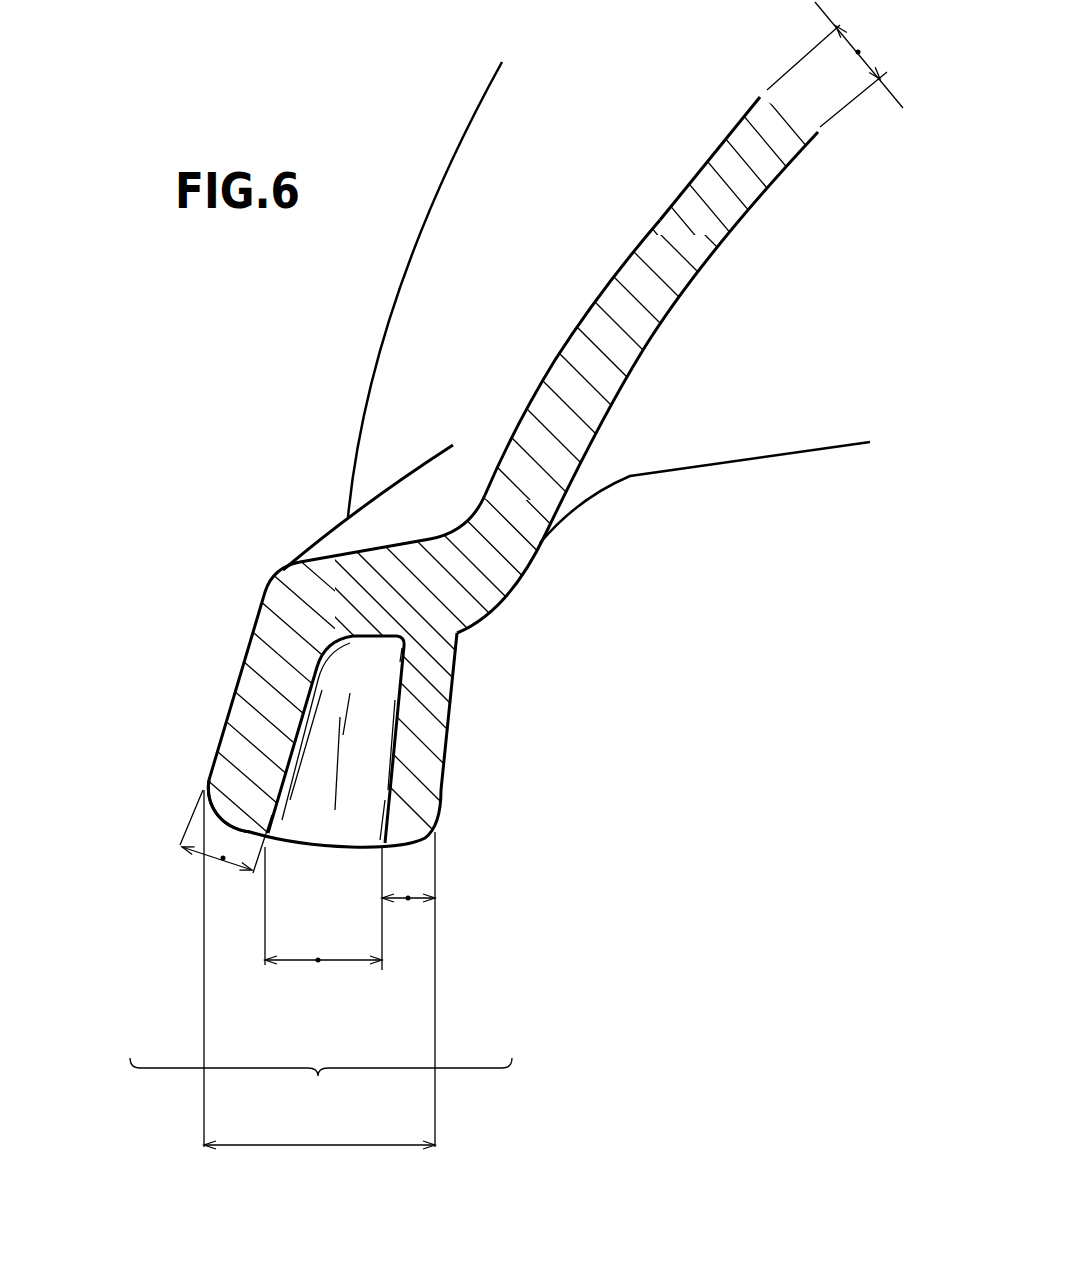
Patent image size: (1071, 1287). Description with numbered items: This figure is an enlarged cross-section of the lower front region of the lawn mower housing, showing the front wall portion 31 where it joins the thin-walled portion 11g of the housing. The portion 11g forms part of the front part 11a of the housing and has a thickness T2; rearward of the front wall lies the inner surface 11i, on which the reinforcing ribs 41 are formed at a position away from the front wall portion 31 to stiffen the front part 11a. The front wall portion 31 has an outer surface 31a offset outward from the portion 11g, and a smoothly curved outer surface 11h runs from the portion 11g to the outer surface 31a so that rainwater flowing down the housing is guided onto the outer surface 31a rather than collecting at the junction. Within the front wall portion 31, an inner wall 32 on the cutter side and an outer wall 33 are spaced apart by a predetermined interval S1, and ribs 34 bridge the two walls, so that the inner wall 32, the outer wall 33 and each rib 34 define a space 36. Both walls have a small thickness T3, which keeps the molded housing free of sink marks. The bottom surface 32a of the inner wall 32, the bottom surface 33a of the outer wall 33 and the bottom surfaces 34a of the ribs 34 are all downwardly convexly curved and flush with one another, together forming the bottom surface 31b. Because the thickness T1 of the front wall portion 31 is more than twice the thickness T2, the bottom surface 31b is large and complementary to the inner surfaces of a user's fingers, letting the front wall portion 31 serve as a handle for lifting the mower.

The front part 11a is at (663, 210).
The portion of the housing 11g is at (735, 123).
The inner surface 11i is at (703, 265).
The curved outer surface 11h is at (403, 543).
The reinforcing ribs 41 is at (778, 432).
The front wall portion 31 is at (310, 834).
The outer surface 31a is at (252, 640).
The bottom surface 31b is at (321, 943).
The inner wall 32 is at (442, 717).
The outer wall 33 is at (248, 688).
The ribs 34 is at (365, 768).
The space 36 is at (336, 795).
The bottom surface of the outer wall 33a is at (233, 823).
The bottom surfaces of the ribs 34a is at (362, 847).
The bottom surface of the inner wall 32a is at (428, 833).
The thickness of the front wall portion T1 is at (319, 985).
The thickness of the housing portion T2 is at (858, 52).
The thickness of the walls T3 is at (223, 858).
The interval between walls S1 is at (318, 960).